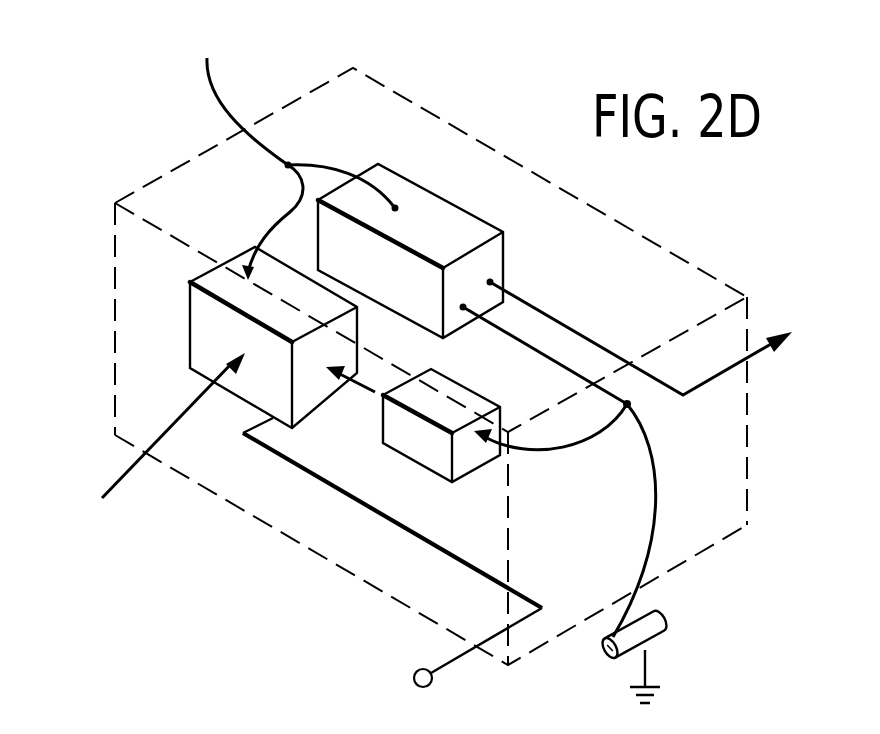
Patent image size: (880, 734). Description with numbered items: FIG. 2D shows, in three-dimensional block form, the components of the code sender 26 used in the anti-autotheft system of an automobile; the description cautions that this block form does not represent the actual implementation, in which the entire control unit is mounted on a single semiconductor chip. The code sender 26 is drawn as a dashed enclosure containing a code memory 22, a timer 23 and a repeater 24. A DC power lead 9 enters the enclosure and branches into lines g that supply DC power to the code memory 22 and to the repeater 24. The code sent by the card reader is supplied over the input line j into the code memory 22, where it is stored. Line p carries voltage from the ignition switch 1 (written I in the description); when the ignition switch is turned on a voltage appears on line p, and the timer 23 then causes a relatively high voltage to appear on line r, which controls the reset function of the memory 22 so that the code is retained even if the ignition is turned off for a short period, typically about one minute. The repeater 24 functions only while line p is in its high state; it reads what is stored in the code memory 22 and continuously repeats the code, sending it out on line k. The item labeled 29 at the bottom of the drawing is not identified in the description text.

The code sender 26 is at (113, 272).
The circuit board / terminal plate 29 is at (414, 677).
The code memory 22 is at (193, 331).
The repeater 24 is at (462, 228).
The timer 23 is at (423, 452).
The DC supply lead 9 is at (210, 100).
The DC power supply line g is at (336, 168).
The code input line j is at (165, 435).
The reset control line r is at (360, 392).
The code output line k is at (542, 315).
The ignition voltage line p is at (552, 362).
The ignition switch 1 is at (662, 626).